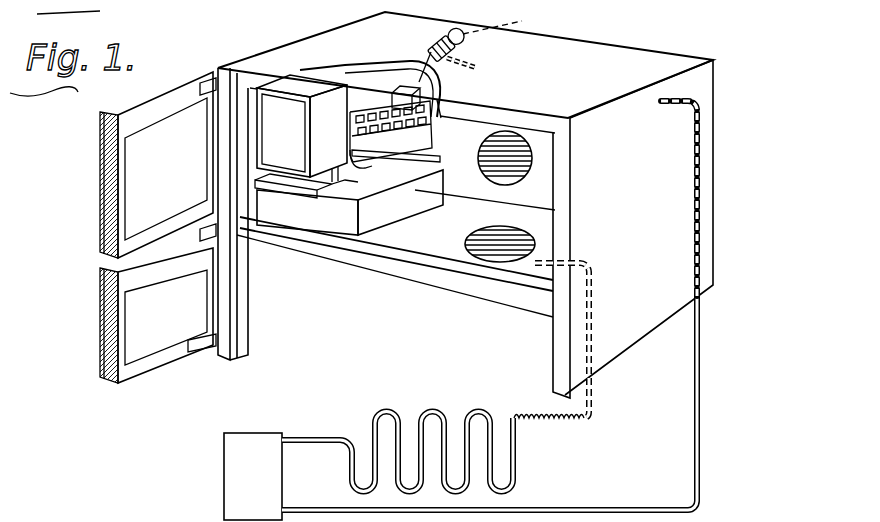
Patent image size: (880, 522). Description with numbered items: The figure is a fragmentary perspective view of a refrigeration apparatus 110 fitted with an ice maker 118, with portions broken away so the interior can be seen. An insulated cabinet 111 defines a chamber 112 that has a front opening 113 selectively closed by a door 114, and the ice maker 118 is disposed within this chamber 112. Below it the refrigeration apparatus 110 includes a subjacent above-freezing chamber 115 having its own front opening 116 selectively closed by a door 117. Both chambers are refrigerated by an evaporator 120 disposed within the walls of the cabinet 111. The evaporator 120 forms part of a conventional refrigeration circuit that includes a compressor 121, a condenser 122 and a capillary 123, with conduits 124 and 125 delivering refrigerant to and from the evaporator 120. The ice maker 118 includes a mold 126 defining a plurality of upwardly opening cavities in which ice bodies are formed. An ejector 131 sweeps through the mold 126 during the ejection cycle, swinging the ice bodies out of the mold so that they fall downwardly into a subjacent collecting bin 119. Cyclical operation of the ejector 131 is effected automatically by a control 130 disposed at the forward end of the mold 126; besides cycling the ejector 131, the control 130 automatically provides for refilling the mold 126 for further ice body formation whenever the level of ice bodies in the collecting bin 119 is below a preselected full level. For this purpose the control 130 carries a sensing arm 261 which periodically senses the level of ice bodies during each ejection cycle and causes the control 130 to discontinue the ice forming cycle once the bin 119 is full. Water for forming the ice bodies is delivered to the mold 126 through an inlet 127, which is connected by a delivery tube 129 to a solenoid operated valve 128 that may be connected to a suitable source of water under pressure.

The refrigeration apparatus 110 is at (655, 66).
The insulated cabinet 111 is at (677, 165).
The chamber 112 is at (482, 219).
The front opening 113 is at (363, 247).
The door 114 is at (130, 203).
The above-freezing chamber 115 is at (320, 308).
The front opening 116 is at (246, 348).
The door 117 is at (97, 360).
The ice maker 118 is at (354, 97).
The collecting bin 119 is at (403, 210).
The evaporator 120 is at (502, 155).
The compressor 121 is at (240, 460).
The condenser 122 is at (388, 410).
The capillary 123 is at (556, 420).
The conduit 124 is at (593, 394).
The conduit 125 is at (703, 400).
The mold 126 is at (438, 118).
The inlet 127 is at (407, 86).
The solenoid operated valve 128 is at (512, 21).
The delivery tube 129 is at (465, 53).
The control 130 is at (273, 115).
The ejector 131 is at (377, 102).
The sensing arm 261 is at (402, 158).